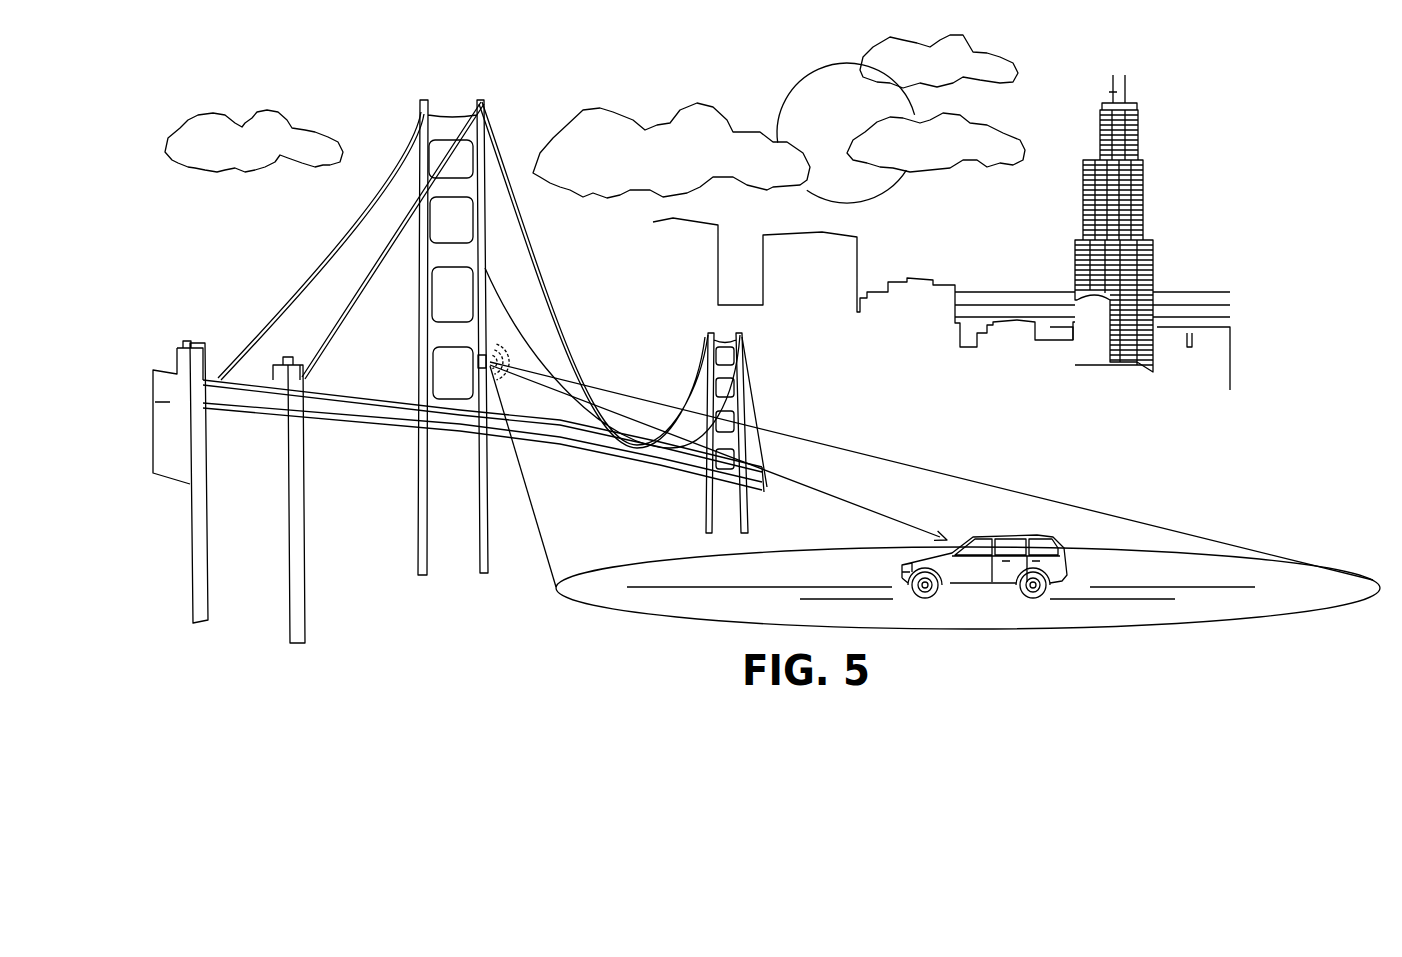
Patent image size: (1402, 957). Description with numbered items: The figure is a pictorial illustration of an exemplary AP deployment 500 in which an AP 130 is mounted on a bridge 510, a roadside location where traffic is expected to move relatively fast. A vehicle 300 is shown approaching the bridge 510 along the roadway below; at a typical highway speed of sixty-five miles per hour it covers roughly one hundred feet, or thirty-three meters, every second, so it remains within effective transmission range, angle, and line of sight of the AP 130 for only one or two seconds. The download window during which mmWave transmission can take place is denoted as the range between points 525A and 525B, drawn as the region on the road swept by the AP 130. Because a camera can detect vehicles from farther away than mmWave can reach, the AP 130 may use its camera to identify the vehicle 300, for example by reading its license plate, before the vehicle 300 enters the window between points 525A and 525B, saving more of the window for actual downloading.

The AP deployment 500 is at (1257, 253).
The bridge 510 is at (332, 398).
The AP 130 is at (497, 353).
The point 525A is at (592, 522).
The point 525B is at (882, 458).
The vehicle 300 is at (1052, 536).